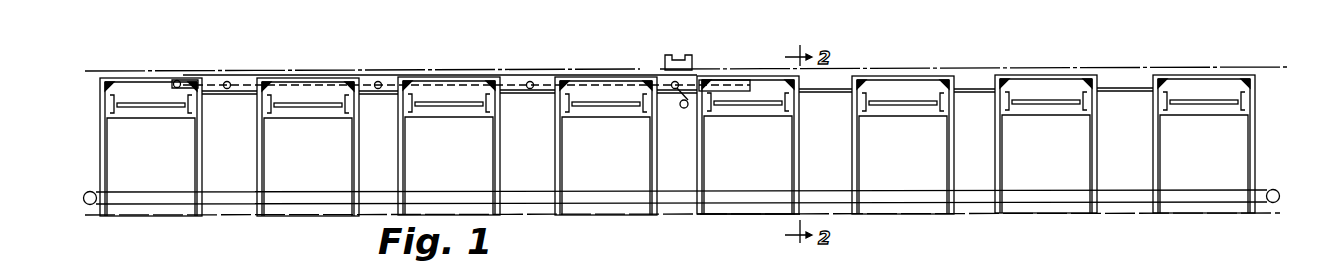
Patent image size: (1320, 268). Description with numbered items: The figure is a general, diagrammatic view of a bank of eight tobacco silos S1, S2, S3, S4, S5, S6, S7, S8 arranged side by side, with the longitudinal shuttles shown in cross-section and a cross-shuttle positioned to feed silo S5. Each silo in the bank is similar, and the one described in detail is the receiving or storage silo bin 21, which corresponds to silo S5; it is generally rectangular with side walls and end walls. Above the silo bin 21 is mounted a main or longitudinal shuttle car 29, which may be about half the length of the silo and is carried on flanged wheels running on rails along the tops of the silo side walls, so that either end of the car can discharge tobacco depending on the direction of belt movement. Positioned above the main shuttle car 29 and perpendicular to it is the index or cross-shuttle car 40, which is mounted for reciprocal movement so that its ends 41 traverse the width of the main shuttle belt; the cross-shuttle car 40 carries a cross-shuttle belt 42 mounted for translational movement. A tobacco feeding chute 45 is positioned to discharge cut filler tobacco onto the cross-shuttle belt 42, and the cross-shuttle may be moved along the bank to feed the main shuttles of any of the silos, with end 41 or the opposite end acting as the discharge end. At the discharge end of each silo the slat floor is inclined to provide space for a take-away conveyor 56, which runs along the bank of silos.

The silo bin 21 is at (745, 223).
The main shuttle car 29 is at (312, 112).
The cross-shuttle car 40 is at (532, 76).
The end of cross-shuttle car 41 is at (178, 86).
The cross-shuttle belt 42 is at (380, 80).
The chute 45 is at (665, 56).
The take-away conveyor 56 is at (315, 204).
The silo S1 is at (148, 176).
The silo S2 is at (305, 176).
The silo S3 is at (446, 175).
The silo S4 is at (603, 175).
The silo S5 is at (745, 174).
The silo S6 is at (900, 174).
The silo S7 is at (1043, 173).
The silo S8 is at (1201, 173).